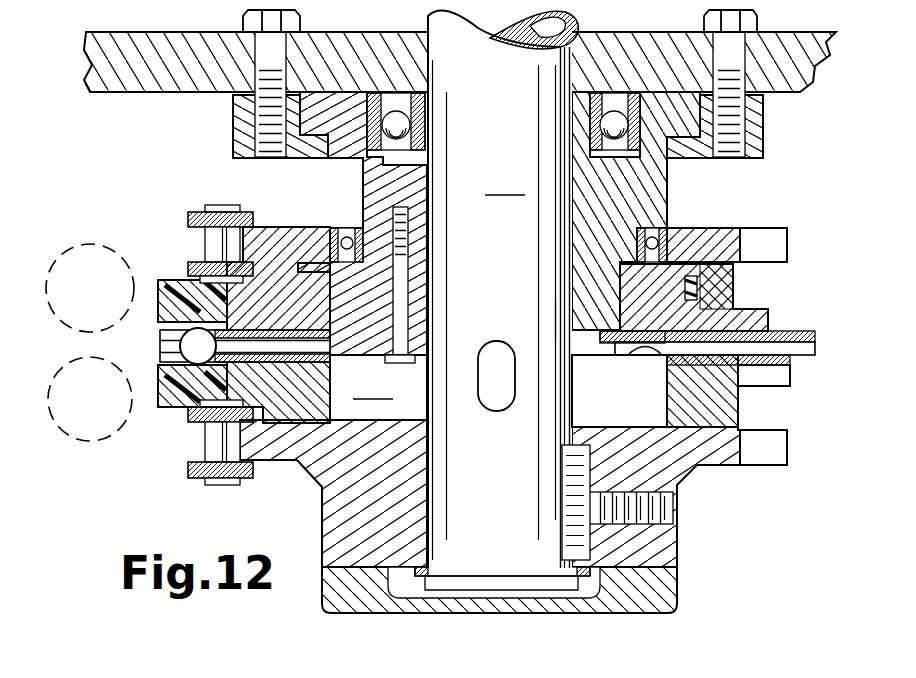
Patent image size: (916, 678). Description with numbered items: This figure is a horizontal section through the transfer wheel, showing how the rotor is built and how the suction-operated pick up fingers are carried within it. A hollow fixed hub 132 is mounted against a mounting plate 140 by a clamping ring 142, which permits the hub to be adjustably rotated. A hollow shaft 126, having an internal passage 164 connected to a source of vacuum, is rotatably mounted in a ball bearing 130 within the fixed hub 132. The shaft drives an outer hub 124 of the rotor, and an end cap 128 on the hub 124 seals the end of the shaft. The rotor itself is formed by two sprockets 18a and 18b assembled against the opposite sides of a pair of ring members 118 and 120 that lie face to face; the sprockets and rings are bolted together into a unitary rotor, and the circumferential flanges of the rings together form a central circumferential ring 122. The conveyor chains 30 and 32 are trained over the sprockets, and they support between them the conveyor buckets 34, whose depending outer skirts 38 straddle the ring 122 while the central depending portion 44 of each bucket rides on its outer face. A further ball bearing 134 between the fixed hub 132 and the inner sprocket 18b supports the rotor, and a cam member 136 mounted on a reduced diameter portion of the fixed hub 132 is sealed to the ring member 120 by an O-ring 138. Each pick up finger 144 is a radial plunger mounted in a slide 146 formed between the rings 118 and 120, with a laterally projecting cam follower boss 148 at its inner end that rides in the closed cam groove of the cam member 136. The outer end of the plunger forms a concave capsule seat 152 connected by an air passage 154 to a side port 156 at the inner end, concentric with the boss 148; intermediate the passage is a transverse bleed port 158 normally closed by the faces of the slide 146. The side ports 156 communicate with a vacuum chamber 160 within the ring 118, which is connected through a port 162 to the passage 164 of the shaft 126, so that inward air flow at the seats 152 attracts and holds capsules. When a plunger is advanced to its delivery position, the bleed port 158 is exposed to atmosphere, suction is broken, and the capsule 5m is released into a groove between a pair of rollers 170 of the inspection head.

The mounting plate 140 is at (812, 57).
The clamping ring 142 is at (766, 128).
The fixed hub 132 is at (672, 166).
The ball bearing 130 is at (604, 40).
The ball bearing 134 is at (658, 226).
The cam member 136 is at (713, 228).
The inner sprocket 18b is at (780, 228).
The ring member 120 is at (770, 317).
The O-ring 138 is at (698, 288).
The pick up finger 144 is at (808, 334).
The capsule seat 152 is at (815, 349).
The air passage 154 is at (790, 362).
The central circumferential ring 122 is at (778, 388).
The ring member 118 is at (722, 410).
The outer hub 124 is at (665, 543).
The sprocket 18a is at (770, 466).
The end cap 128 is at (655, 595).
The hollow shaft 126 is at (509, 289).
The internal passage 164 is at (530, 28).
The cam follower boss 148 is at (612, 319).
The port 162 is at (478, 368).
The vacuum chamber 160 is at (378, 387).
The transverse bleed port 158 is at (737, 358).
The side port 156 is at (620, 358).
The slide 146 is at (660, 356).
The outer skirt 38 is at (250, 270).
The conveyor bucket 34 is at (172, 410).
The capsule 5m is at (178, 344).
The chain 32 is at (205, 240).
The central depending portion 44 is at (188, 466).
The chain 30 is at (212, 480).
The roller 170 is at (90, 247).